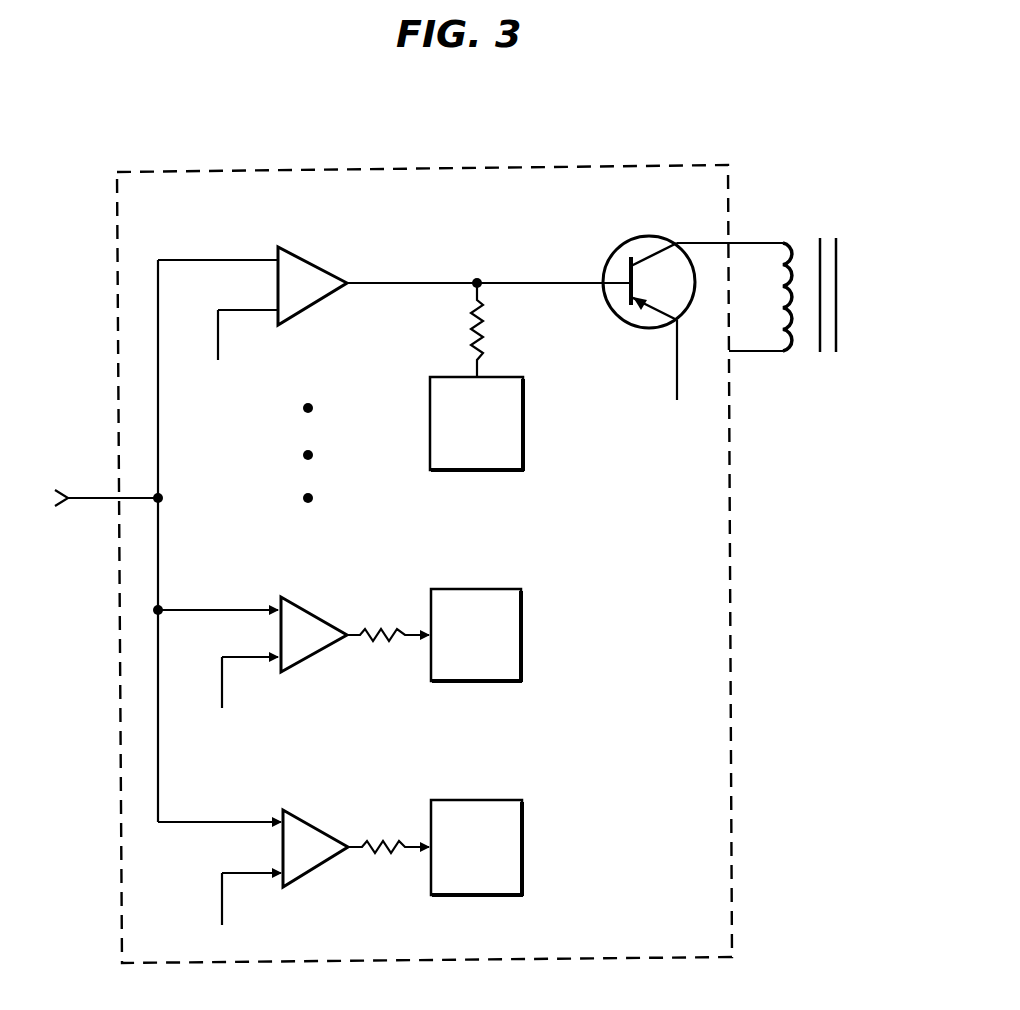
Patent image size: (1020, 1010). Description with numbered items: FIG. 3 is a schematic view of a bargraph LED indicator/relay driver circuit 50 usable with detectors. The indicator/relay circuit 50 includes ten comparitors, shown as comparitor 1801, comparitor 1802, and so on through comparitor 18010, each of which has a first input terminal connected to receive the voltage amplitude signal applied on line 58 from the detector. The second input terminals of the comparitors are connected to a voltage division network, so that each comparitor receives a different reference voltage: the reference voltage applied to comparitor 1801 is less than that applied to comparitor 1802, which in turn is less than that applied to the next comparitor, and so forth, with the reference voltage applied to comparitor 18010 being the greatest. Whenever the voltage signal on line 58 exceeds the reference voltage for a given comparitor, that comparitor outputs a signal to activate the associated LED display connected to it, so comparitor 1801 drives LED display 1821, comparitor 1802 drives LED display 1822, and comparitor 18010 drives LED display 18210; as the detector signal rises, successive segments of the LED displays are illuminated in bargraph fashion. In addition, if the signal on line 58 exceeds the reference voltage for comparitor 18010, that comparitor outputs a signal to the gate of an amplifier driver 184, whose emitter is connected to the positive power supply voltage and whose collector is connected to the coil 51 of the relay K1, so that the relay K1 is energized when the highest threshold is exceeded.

The bargraph LED indicator/relay driver circuit 50 is at (424, 168).
The line 58 is at (78, 498).
The comparitor 18010 is at (318, 264).
The comparitor 1802 is at (318, 617).
The comparitor 1801 is at (310, 826).
The LED display 18210 is at (515, 377).
The LED display 1822 is at (508, 589).
The LED display 1821 is at (505, 800).
The amplifier driver 184 is at (623, 246).
The coil 51 is at (787, 241).
The relay K1 is at (880, 207).